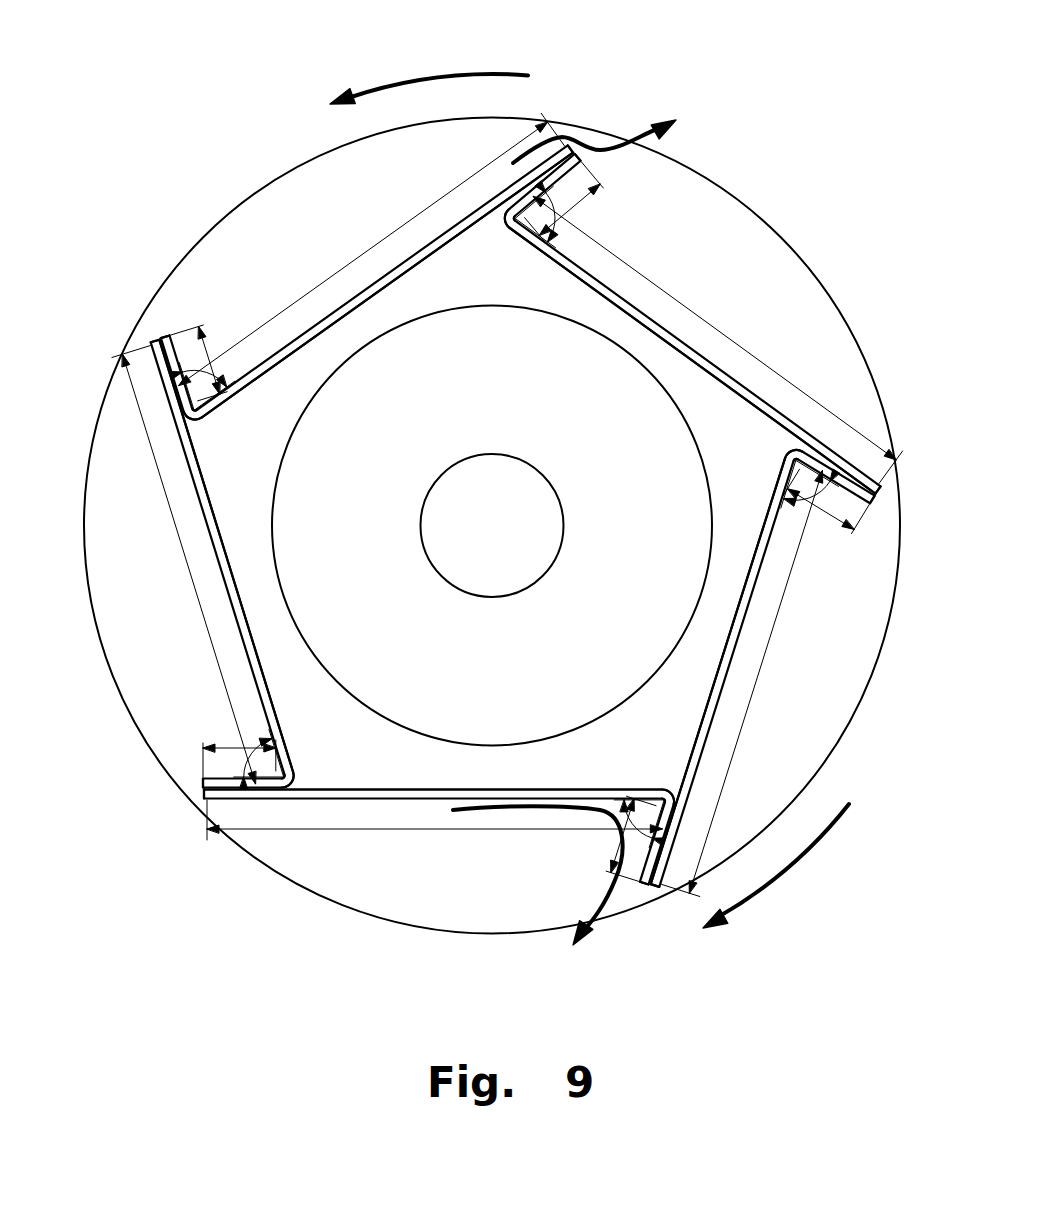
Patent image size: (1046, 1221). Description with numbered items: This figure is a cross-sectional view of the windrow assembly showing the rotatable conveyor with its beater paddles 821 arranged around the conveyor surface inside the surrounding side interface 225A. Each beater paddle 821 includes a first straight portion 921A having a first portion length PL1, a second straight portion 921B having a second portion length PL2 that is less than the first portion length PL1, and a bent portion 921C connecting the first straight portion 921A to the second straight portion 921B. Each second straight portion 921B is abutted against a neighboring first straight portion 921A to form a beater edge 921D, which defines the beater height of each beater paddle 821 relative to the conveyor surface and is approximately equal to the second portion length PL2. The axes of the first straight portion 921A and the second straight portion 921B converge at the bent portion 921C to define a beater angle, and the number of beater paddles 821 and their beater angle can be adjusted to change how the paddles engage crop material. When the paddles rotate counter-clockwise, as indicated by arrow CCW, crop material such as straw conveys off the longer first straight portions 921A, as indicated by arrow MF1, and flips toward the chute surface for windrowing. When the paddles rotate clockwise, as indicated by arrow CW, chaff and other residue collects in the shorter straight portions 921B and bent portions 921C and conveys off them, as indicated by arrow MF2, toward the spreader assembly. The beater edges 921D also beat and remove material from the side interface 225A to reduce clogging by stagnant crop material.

The beater paddle 821 is at (378, 806).
The first straight portion 921A is at (430, 789).
The second straight portion 921B is at (643, 886).
The bent portion 921C is at (668, 790).
The beater edge 921D is at (204, 797).
The first portion length PL1 is at (507, 504).
The second portion length PL2 is at (612, 845).
The arrow indicating crop material flow during counter-clockwise rotation MF1 is at (593, 142).
The arrow indicating crop material flow during clockwise rotation MF2 is at (528, 814).
The counter-clockwise rotation direction CCW is at (440, 76).
The clockwise rotation direction CW is at (778, 880).
The side interface 225A is at (731, 190).